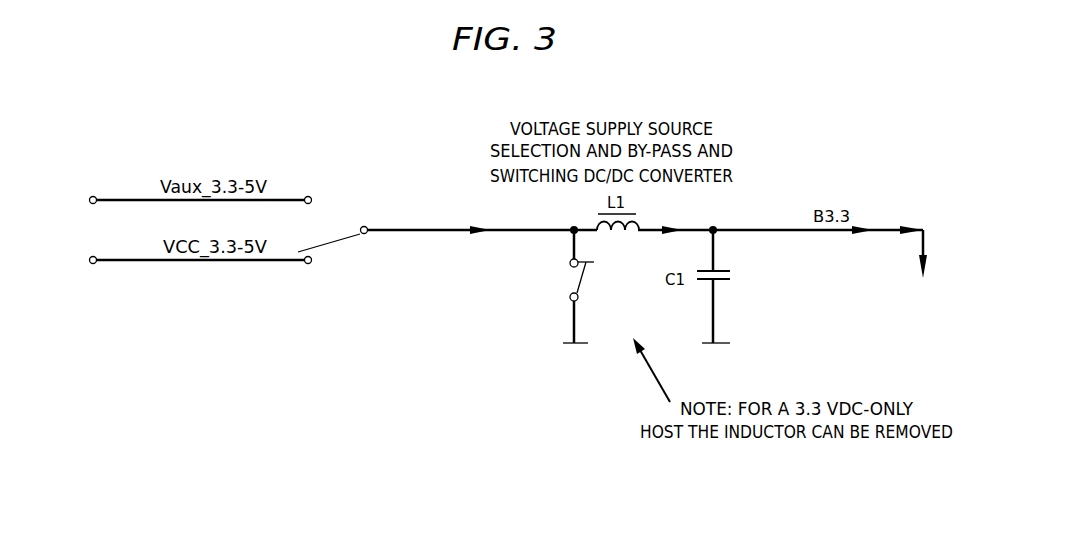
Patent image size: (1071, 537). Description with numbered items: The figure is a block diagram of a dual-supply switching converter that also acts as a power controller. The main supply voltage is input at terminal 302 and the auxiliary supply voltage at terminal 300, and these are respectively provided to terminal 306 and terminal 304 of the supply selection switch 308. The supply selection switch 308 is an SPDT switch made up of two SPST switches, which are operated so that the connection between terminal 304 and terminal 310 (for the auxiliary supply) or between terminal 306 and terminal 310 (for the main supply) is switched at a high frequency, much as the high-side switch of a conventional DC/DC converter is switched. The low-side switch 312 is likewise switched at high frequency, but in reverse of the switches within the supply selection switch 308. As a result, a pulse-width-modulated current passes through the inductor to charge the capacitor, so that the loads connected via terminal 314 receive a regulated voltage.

The auxiliary supply terminal 300 is at (152, 200).
The main supply terminal 302 is at (152, 260).
The supply selection switch terminal for auxiliary supply 304 is at (307, 195).
The supply selection switch terminal for main supply 306 is at (307, 265).
The supply selection switch 308 is at (350, 243).
The supply selection switch common terminal 310 is at (420, 232).
The low-side switch 312 is at (562, 283).
The output terminal 314 is at (886, 237).